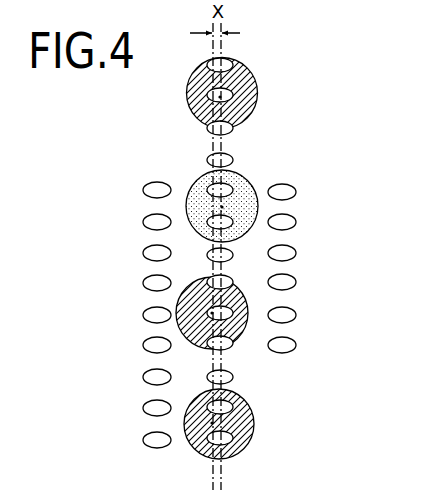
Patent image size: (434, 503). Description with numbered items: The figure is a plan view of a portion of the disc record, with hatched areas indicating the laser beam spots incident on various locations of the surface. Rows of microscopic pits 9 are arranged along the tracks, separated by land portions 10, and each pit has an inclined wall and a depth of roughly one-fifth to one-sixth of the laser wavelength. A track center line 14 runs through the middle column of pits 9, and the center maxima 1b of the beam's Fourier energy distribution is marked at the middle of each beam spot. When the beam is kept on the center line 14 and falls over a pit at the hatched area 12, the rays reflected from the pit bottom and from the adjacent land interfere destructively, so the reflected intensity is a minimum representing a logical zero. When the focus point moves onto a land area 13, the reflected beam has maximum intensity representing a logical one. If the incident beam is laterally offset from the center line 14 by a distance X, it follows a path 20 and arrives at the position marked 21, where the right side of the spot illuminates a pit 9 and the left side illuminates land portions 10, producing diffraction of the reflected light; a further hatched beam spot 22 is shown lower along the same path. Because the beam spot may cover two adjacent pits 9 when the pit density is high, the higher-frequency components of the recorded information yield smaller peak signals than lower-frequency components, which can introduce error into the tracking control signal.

The center maxima 1b is at (222, 96).
The microscopic pits 9 is at (210, 94).
The land portions 10 is at (204, 144).
The hatched area 12 is at (253, 112).
The land area 13 is at (255, 184).
The center line 14 is at (221, 473).
The path 20 is at (212, 473).
The position 21 is at (247, 303).
The fourth roller 22 is at (252, 433).